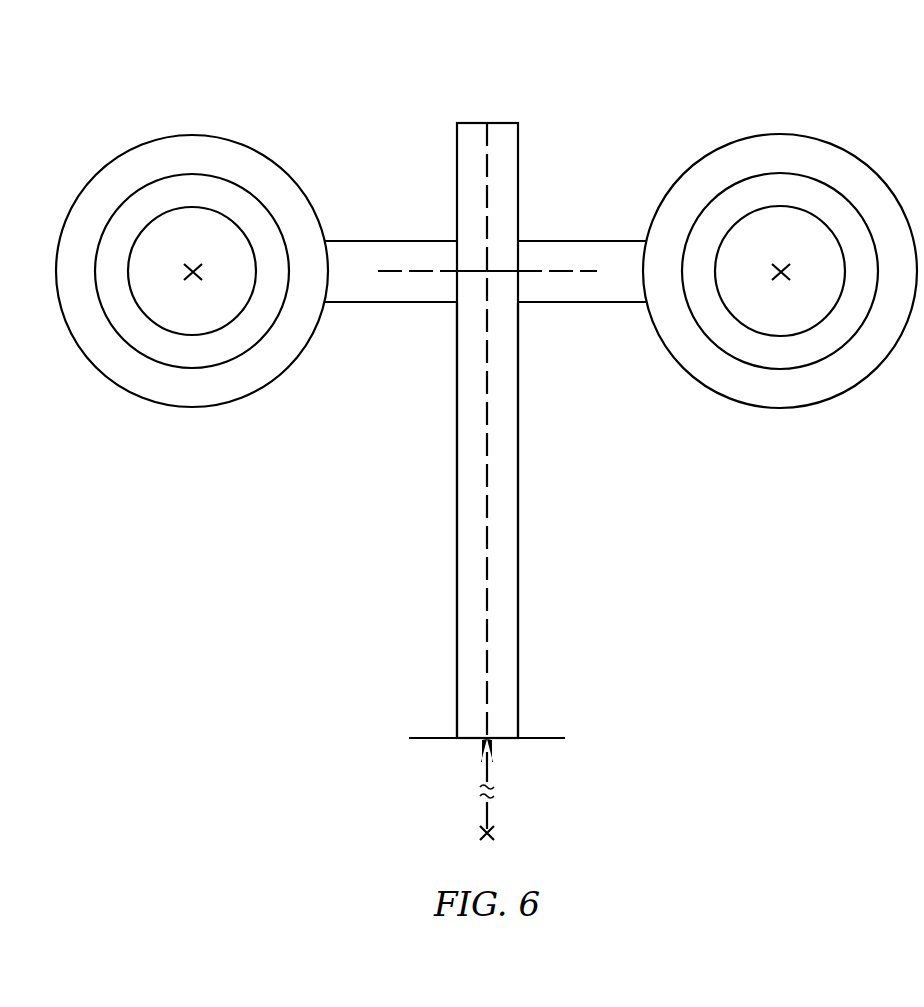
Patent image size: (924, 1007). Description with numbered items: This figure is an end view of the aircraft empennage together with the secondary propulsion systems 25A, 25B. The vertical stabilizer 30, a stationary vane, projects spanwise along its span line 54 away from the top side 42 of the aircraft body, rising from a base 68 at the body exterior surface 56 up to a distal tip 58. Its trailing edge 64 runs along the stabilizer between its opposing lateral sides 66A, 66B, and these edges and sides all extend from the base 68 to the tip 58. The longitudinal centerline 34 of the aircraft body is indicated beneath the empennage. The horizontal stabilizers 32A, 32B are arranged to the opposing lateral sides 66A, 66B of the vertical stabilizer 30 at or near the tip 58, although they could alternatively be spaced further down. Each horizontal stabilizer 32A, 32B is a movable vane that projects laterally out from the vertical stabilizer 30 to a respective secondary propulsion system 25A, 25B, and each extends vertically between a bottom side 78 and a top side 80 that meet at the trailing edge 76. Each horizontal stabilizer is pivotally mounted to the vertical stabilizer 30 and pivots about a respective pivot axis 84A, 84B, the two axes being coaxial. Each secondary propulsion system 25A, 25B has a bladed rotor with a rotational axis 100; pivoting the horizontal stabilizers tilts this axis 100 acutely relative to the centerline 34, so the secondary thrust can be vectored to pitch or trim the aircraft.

The secondary propulsion system 25A is at (845, 137).
The secondary propulsion system 25B is at (130, 138).
The rotational axis 100 is at (194, 279).
The vertical stabilizer 30 is at (525, 123).
The distal tip 58 is at (473, 123).
The span line 54 is at (488, 470).
The trailing edge 64 is at (502, 420).
The lateral side 66A is at (518, 555).
The lateral side 66B is at (456, 555).
The horizontal stabilizer 32A is at (578, 228).
The horizontal stabilizer 32B is at (396, 228).
The pivot axis 84A is at (594, 272).
The pivot axis 84B is at (383, 270).
The top side 80 is at (418, 241).
The bottom side 78 is at (399, 302).
The trailing edge 76 is at (368, 275).
The top side 42 is at (553, 737).
The exterior surface 56 is at (553, 737).
The base 68 is at (510, 740).
The longitudinal centerline 34 is at (493, 832).